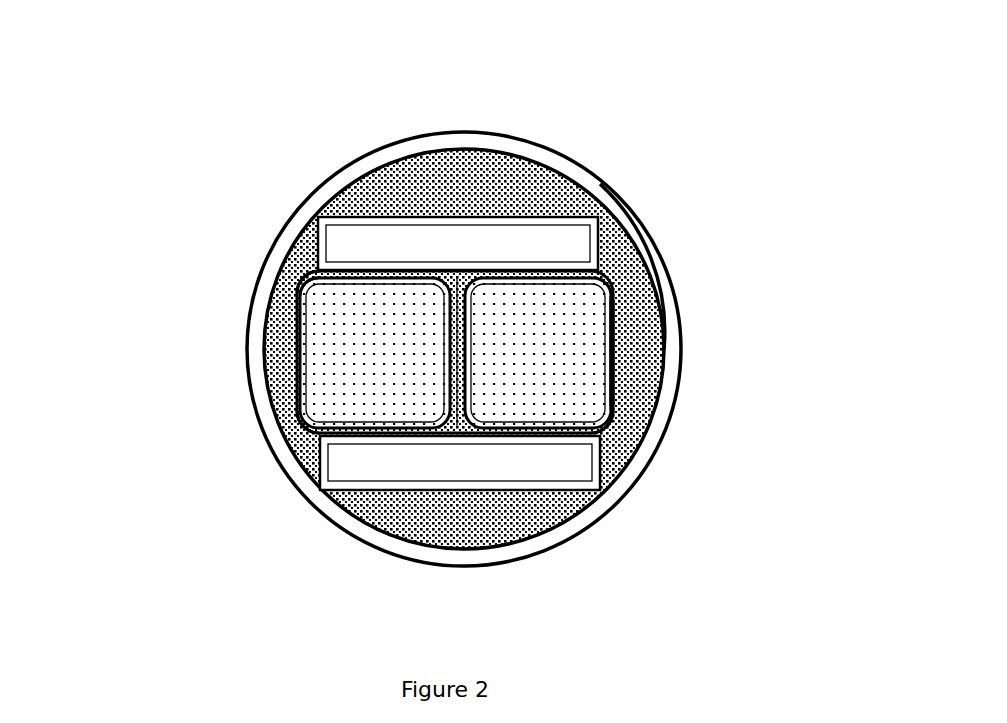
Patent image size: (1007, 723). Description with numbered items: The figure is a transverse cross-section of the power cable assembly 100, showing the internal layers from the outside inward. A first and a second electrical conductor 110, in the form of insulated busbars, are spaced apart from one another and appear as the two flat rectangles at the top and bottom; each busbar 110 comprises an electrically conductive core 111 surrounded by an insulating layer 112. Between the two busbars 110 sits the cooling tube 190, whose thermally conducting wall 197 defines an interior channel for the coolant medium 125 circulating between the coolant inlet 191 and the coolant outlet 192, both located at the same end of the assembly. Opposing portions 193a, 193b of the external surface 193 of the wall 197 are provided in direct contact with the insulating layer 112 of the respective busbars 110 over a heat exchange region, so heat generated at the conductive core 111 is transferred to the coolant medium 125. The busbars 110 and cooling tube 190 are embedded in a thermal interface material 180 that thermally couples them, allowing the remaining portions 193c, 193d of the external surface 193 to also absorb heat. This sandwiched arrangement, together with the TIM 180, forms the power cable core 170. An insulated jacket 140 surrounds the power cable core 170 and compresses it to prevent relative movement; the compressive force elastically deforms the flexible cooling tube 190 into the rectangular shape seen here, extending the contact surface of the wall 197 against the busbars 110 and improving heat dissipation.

The power cable assembly 100 is at (172, 186).
The electrical conductor 110 is at (638, 97).
The electrically conductive core 111 is at (490, 250).
The insulating layer 112 is at (597, 224).
The coolant medium 125 is at (598, 327).
The insulated jacket 140 is at (668, 346).
The power cable core 170 is at (478, 508).
The thermal interface material 180 is at (634, 272).
The cooling tube 190 is at (308, 382).
The coolant inlet 191 is at (538, 353).
The coolant outlet 192 is at (375, 353).
The external surface 193 is at (620, 361).
The opposing portion of external surface 193a is at (337, 280).
The opposing portion of external surface 193b is at (312, 434).
The portion of external surface 193c is at (295, 299).
The portion of external surface 193d is at (615, 380).
The thermally conducting wall 197 is at (630, 383).